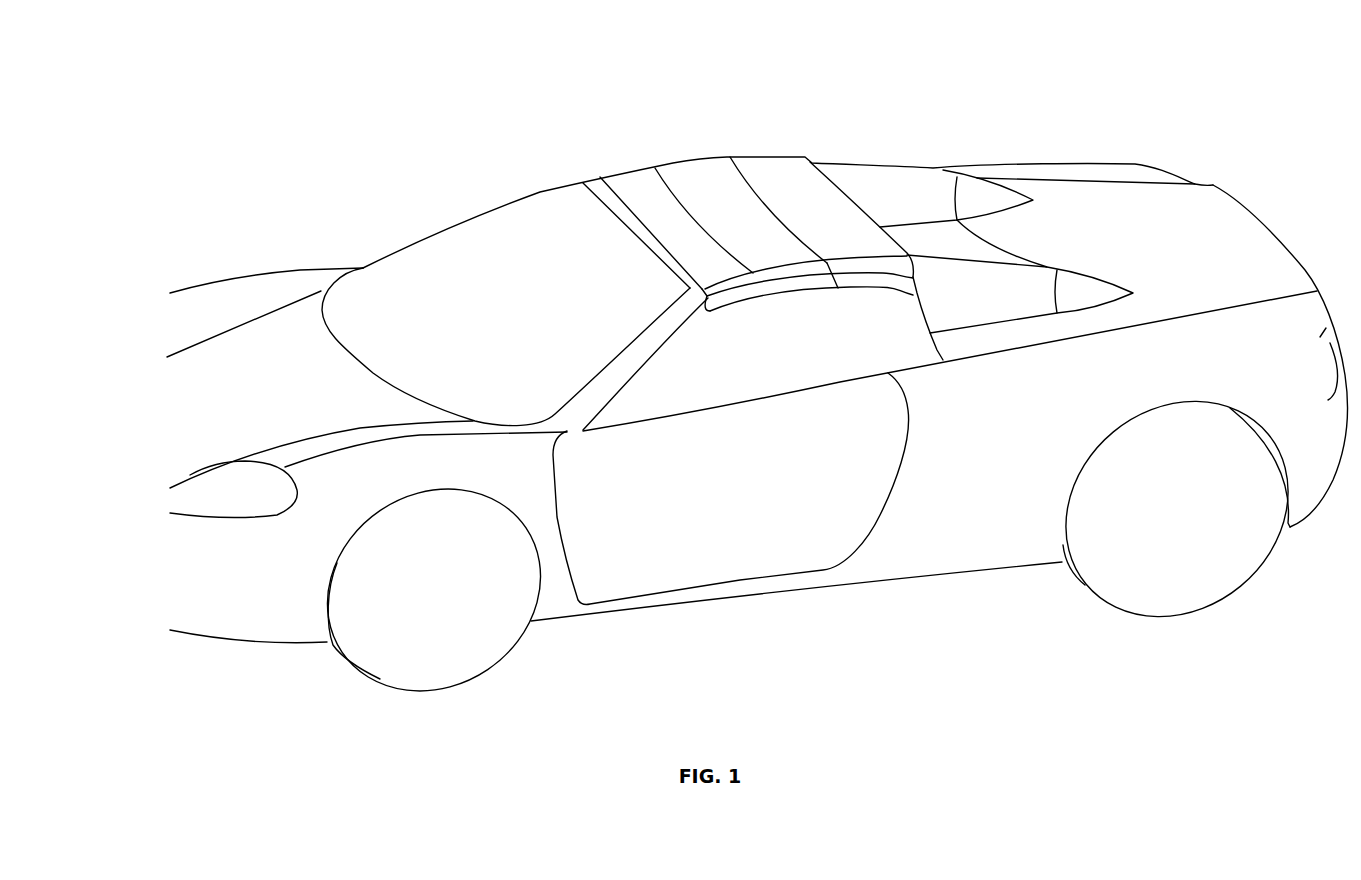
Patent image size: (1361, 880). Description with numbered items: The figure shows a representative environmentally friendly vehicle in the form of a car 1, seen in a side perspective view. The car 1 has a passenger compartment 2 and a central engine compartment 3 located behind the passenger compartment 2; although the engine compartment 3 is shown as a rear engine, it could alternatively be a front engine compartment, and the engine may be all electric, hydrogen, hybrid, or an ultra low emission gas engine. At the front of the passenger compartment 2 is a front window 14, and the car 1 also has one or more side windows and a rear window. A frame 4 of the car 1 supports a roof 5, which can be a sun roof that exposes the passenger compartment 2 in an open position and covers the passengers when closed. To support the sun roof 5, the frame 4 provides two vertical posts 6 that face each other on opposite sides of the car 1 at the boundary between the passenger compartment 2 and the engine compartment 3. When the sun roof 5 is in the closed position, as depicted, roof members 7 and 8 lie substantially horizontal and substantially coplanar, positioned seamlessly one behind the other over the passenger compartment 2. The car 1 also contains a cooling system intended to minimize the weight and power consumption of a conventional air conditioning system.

The car 1 is at (454, 701).
The passenger compartment 2 is at (504, 168).
The central engine compartment 3 is at (1143, 143).
The frame 4 is at (850, 602).
The roof 5 is at (738, 102).
The vertical posts 6 is at (912, 355).
The roof member 7 is at (694, 146).
The roof member 8 is at (773, 163).
The front window 14 is at (447, 244).